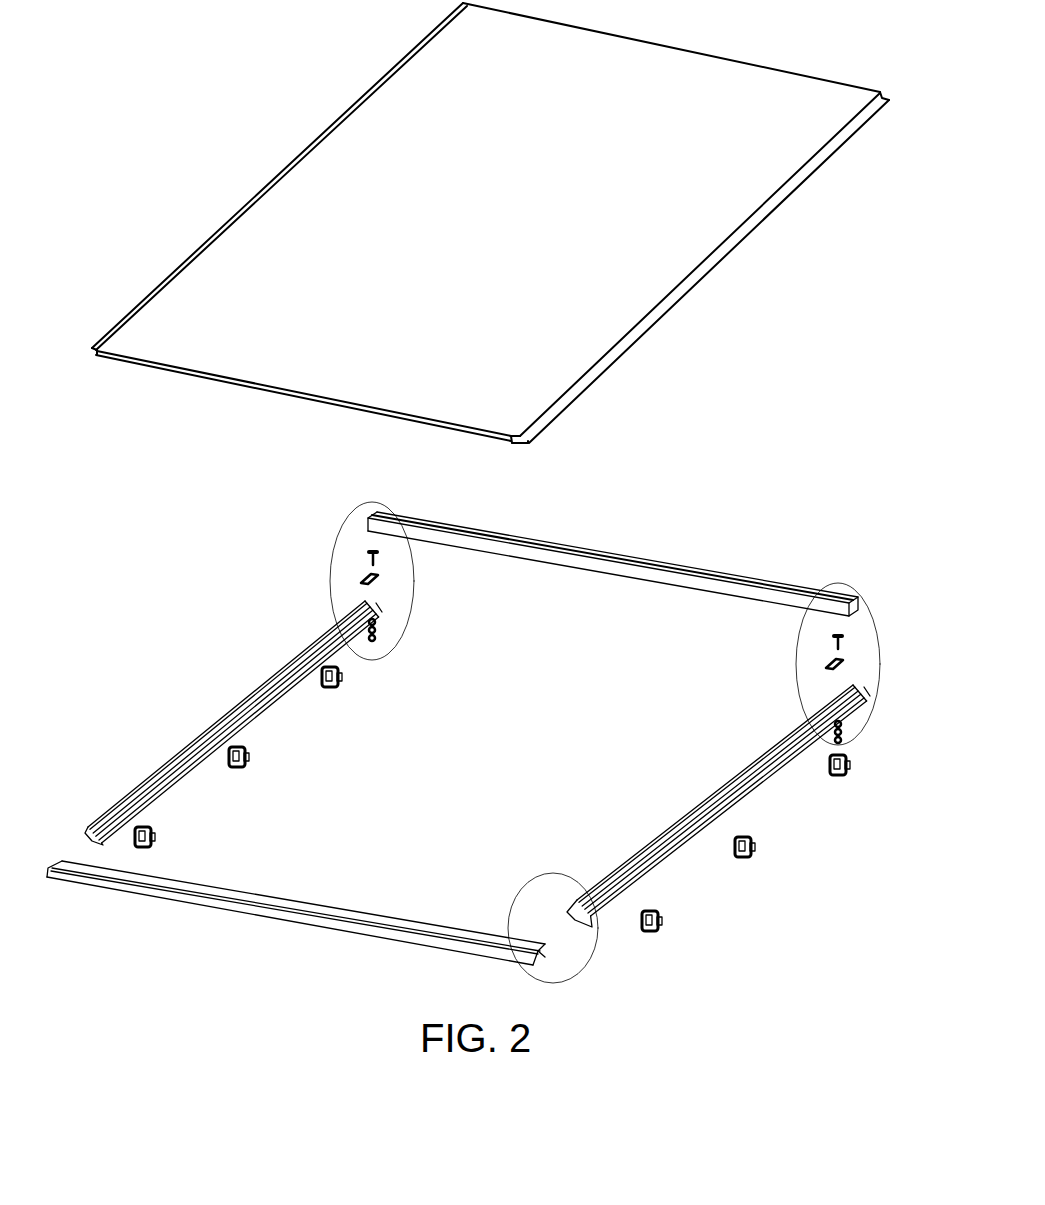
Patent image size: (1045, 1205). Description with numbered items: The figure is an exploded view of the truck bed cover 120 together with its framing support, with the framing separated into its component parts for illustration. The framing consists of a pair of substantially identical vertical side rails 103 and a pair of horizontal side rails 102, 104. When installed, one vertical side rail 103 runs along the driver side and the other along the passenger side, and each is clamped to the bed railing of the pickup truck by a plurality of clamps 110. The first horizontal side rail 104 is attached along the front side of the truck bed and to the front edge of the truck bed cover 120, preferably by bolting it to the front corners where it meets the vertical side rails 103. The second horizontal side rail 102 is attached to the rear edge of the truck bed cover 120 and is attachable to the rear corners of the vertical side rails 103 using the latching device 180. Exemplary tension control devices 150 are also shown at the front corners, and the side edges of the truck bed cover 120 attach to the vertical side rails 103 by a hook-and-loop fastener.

The truck bed cover 120 is at (284, 136).
The second horizontal side rail 102 is at (322, 908).
The first horizontal side rail 104 is at (668, 570).
The vertical side rails 103 is at (288, 667).
The clamps 110 is at (509, 812).
The tension control devices 150 is at (343, 554).
The latching device 180 is at (552, 916).